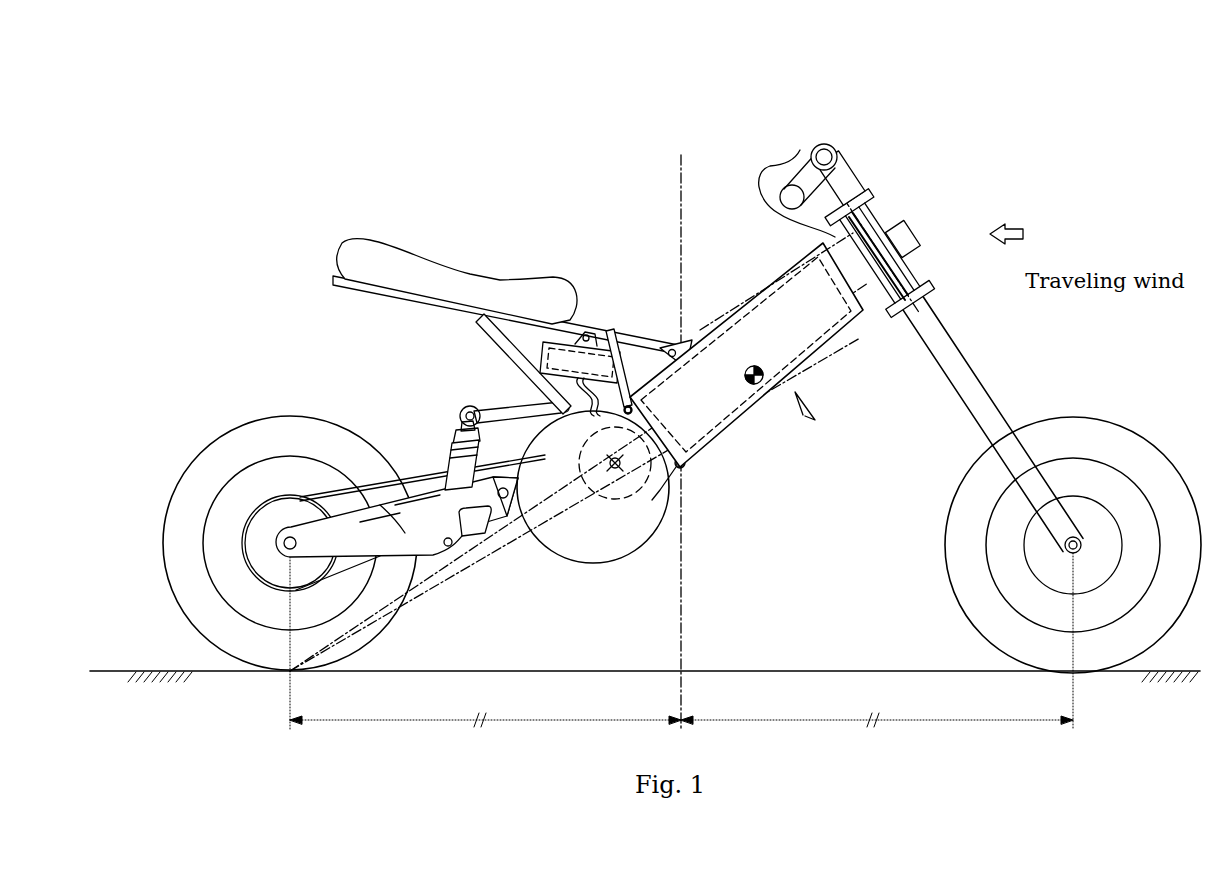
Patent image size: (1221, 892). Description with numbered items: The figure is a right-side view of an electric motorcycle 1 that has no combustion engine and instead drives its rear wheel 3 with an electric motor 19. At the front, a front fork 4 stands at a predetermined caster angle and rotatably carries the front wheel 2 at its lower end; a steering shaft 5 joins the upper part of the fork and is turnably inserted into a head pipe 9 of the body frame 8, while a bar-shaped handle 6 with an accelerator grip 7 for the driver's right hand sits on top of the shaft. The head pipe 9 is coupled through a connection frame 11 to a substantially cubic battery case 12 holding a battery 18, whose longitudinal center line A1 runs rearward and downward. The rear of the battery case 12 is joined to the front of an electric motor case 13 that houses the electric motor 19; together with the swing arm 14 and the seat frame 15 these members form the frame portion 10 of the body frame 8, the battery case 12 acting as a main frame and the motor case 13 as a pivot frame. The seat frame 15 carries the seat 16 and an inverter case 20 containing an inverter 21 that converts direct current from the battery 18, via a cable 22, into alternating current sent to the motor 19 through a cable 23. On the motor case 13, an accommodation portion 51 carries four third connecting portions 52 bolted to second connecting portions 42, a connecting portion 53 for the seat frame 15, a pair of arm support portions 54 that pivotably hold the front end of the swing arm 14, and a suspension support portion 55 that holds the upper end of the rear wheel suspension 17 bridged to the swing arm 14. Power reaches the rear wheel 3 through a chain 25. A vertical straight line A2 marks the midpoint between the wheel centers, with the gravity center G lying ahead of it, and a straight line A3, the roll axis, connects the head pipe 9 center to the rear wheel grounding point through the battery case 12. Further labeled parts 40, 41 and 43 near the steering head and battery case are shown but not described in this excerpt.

The electric motorcycle 1 is at (295, 158).
The front wheel 2 is at (1100, 445).
The rear wheel 3 is at (208, 448).
The front fork 4 is at (985, 382).
The steering shaft 5 is at (892, 222).
The handle 6 is at (858, 172).
The accelerator grip 7 is at (820, 148).
The body frame 8 is at (845, 400).
The head pipe 9 is at (888, 315).
The frame portion 10 is at (817, 427).
The connection frame 11 is at (797, 198).
The battery case 12 is at (762, 280).
The electric motor case 13 is at (580, 540).
The swing arm 14 is at (450, 565).
The seat frame 15 is at (330, 283).
The seat 16 is at (388, 238).
The rear wheel suspension 17 is at (440, 442).
The battery 18 is at (737, 300).
The electric motor 19 is at (617, 540).
The inverter case 20 is at (545, 340).
The inverter 21 is at (520, 330).
The cable 22 is at (615, 330).
The cable 23 is at (576, 345).
The chain 25 is at (318, 470).
The steering damper 40 is at (918, 235).
The fork tube 41 is at (822, 245).
The second connecting portions 42 is at (628, 400).
The frame bracket 43 is at (672, 348).
The accommodation portion 51 is at (612, 556).
The third connecting portions 52 is at (682, 470).
The connecting portion 53 is at (520, 360).
The arm support portions 54 is at (490, 535).
The suspension support portion 55 is at (466, 398).
The center line A1 is at (732, 430).
The straight line A2 is at (668, 172).
The straight line A3 is at (352, 622).
The gravity center G is at (764, 388).